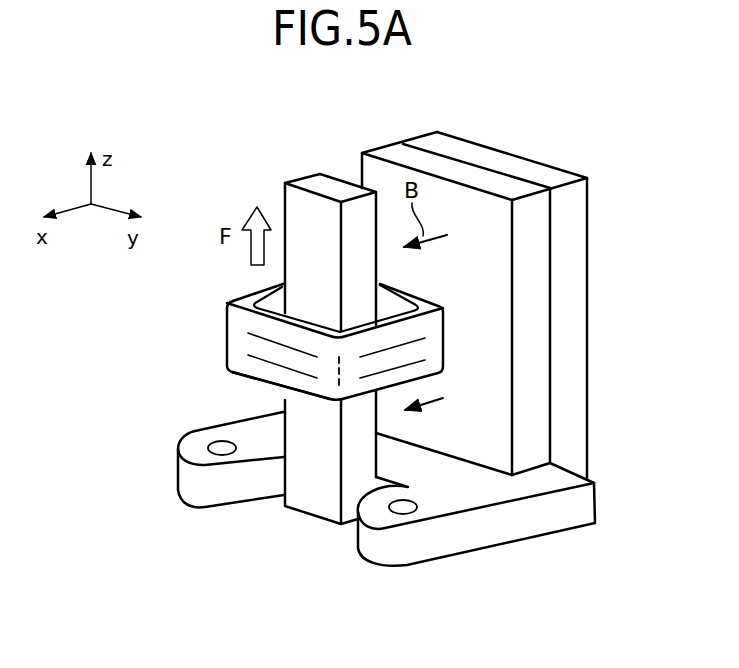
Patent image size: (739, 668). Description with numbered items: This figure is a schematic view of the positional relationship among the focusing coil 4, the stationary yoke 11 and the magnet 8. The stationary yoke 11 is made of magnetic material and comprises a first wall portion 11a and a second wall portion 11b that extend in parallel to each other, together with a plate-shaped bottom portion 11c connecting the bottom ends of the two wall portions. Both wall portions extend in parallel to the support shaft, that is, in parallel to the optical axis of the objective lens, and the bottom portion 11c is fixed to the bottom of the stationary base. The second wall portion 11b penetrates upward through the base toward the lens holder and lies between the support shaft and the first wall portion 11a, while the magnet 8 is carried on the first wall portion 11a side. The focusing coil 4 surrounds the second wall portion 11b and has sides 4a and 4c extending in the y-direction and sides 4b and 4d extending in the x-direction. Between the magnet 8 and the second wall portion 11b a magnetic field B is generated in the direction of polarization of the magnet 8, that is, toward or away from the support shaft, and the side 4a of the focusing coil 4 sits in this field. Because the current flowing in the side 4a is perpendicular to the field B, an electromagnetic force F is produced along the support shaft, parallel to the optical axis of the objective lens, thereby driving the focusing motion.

The focusing coil 4 is at (329, 335).
The side of the focusing coil 4a is at (428, 302).
The side of the focusing coil 4b is at (433, 365).
The side of the focusing coil 4c is at (242, 342).
The side of the focusing coil 4d is at (258, 288).
The magnet 8 is at (537, 248).
The stationary yoke 11 is at (592, 372).
The first wall portion 11a is at (575, 283).
The second wall portion 11b is at (305, 207).
The bottom portion 11c is at (515, 523).